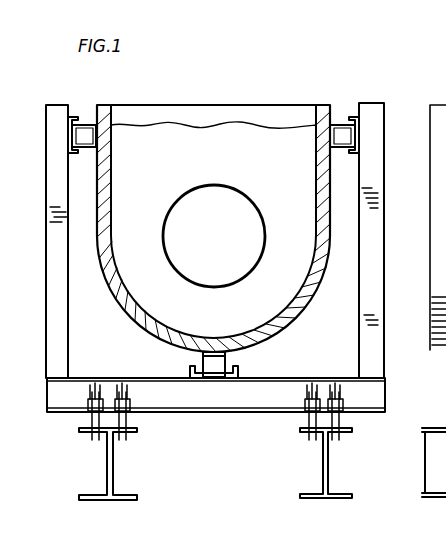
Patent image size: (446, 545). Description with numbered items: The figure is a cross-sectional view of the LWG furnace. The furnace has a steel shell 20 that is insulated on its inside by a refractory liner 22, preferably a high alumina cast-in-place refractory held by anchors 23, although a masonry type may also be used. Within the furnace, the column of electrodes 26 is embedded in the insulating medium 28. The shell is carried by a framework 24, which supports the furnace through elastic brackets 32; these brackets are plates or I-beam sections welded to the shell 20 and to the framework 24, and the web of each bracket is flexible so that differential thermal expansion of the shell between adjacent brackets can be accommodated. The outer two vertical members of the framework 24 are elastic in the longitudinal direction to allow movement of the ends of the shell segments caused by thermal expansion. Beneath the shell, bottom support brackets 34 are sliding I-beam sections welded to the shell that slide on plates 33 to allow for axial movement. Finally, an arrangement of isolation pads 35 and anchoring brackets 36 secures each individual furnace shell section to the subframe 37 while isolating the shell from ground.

The steel shell 20 is at (329, 112).
The refractory liner 22 is at (203, 345).
The anchors 23 is at (285, 333).
The framework 24 is at (403, 367).
The column of electrodes 26 is at (172, 212).
The insulating medium 28 is at (177, 137).
The elastic brackets 32 is at (340, 123).
The plates 33 is at (190, 370).
The bottom support brackets 34 is at (239, 362).
The isolation pads 35 is at (352, 422).
The anchoring brackets 36 is at (124, 403).
The subframe 37 is at (113, 478).